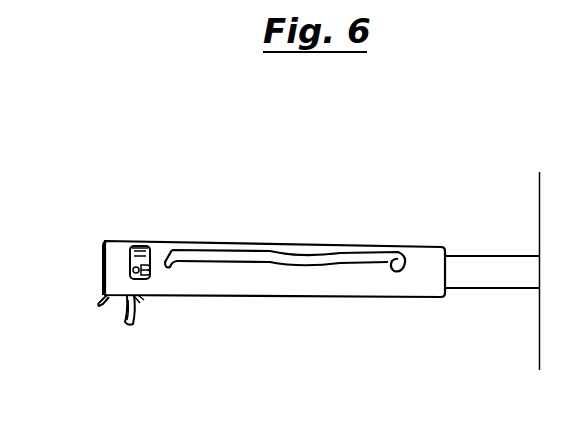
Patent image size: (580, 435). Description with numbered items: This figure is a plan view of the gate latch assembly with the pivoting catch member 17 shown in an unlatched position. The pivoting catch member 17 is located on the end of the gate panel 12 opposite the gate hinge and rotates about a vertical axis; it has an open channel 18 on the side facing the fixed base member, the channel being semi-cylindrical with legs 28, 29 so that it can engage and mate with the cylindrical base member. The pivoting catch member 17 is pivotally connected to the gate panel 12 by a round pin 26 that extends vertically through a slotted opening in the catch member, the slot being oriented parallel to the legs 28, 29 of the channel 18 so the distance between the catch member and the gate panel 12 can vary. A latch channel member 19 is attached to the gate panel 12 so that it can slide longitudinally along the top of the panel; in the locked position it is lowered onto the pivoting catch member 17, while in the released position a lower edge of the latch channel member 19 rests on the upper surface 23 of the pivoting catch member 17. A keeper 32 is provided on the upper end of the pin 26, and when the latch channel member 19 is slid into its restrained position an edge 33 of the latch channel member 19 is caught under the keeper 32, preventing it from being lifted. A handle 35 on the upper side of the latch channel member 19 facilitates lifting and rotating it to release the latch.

The gate panel 12 is at (482, 263).
The pivoting catch member 17 is at (138, 312).
The open channel 18 is at (117, 308).
The latch channel member 19 is at (418, 258).
The upper surface of the pivoting catch member 23 is at (143, 303).
The round pin 26 is at (133, 240).
The leg of the channel 28 is at (130, 325).
The leg of the channel 29 is at (102, 305).
The keeper 32 is at (168, 240).
The edge of the latch channel member 33 is at (152, 240).
The handle 35 is at (243, 257).